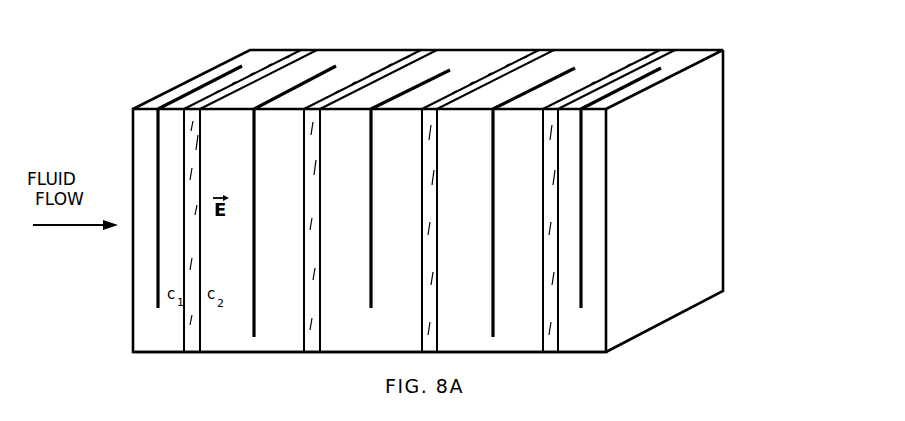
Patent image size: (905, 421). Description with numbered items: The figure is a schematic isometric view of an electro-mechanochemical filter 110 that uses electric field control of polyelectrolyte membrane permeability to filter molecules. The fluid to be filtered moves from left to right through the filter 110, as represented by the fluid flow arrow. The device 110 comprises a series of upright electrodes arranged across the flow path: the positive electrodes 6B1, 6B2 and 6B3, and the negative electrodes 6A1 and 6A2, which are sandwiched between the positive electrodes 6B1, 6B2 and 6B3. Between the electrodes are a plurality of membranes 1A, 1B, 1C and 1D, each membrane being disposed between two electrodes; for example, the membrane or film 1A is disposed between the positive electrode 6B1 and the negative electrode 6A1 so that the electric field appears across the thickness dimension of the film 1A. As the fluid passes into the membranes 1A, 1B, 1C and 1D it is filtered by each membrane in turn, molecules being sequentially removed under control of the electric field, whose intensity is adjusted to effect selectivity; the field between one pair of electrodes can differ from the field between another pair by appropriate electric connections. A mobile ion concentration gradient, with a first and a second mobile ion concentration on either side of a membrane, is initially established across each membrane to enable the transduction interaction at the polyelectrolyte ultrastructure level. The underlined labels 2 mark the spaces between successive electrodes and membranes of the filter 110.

The electromechanochemical filter 110 is at (731, 144).
The + electrode 6B1 is at (157, 133).
The + electrode 6B2 is at (447, 71).
The + electrode 6B3 is at (599, 108).
The − electrode 6A1 is at (253, 161).
The − electrode 6A2 is at (493, 187).
The membrane 1A is at (202, 337).
The membrane 1B is at (320, 337).
The membrane 1C is at (439, 250).
The membrane 1D is at (559, 352).
The flow chamber 2 is at (165, 341).